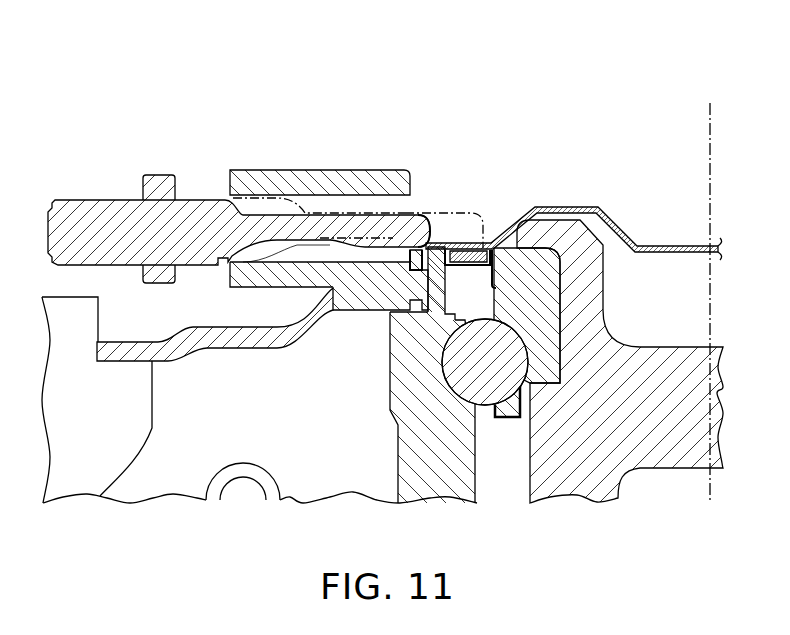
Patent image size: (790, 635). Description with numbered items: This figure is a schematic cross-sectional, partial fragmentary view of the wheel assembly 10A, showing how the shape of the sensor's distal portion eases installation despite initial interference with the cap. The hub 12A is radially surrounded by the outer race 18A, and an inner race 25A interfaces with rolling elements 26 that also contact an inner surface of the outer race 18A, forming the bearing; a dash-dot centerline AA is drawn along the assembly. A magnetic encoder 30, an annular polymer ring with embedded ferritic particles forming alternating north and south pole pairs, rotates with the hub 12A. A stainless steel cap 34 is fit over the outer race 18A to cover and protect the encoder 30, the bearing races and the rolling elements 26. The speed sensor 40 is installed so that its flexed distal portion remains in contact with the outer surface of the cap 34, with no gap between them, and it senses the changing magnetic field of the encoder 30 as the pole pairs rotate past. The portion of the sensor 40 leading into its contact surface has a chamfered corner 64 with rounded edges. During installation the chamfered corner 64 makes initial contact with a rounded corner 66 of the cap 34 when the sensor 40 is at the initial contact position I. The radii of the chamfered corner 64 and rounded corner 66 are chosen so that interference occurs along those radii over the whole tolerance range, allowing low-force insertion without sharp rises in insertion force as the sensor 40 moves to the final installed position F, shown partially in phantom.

The wheel assembly 10A is at (532, 99).
The axis AA is at (710, 152).
The speed sensor 40 is at (352, 213).
The initial contact position I is at (397, 213).
The rounded corner 66 is at (427, 245).
The final installed position F is at (463, 210).
The magnetic encoder 30 is at (468, 257).
The cap 34 is at (563, 209).
The chamfered corner 64 is at (430, 255).
The rolling elements 26 is at (487, 365).
The inner race 25A is at (535, 380).
The outer race 18A is at (478, 478).
The hub 12A is at (633, 477).